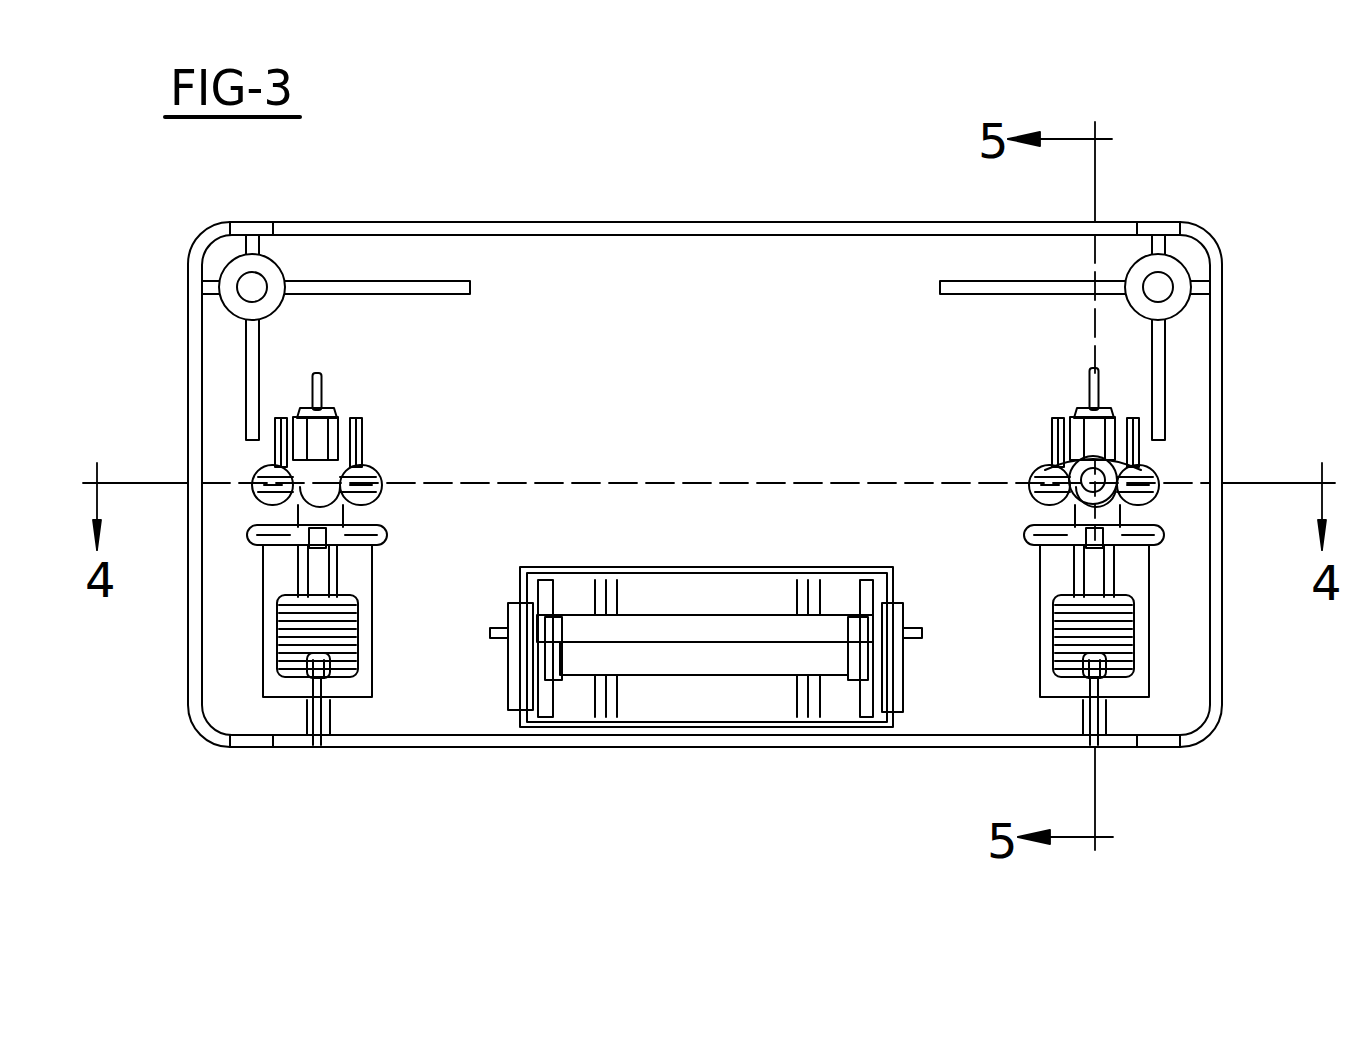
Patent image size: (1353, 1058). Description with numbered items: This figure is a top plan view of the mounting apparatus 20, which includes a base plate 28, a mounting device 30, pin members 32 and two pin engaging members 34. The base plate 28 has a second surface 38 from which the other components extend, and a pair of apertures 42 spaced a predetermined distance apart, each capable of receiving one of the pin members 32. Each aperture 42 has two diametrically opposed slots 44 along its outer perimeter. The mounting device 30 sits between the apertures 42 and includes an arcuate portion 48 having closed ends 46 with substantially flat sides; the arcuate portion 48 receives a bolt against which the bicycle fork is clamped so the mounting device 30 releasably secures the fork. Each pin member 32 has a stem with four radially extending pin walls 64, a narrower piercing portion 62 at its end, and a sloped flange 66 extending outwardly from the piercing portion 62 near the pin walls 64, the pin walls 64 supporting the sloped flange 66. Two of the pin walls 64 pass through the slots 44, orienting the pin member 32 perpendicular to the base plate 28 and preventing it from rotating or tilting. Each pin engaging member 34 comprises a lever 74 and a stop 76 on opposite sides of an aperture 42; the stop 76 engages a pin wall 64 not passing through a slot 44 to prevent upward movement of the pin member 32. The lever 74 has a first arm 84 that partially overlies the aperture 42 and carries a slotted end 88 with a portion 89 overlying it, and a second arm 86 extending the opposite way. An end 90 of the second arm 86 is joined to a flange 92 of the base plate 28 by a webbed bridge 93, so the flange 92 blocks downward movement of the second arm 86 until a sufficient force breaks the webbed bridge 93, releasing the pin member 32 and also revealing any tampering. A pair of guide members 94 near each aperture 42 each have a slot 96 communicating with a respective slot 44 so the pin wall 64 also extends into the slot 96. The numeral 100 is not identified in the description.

The mounting apparatus 20 is at (1172, 205).
The base plate 28 is at (512, 265).
The second surface 38 is at (621, 278).
The mounting device 30 is at (597, 657).
The pin member 32 is at (1172, 475).
The pin engaging member 34 is at (300, 510).
The aperture 42 is at (338, 414).
The slot 44 is at (272, 477).
The closed end 46 is at (895, 667).
The arcuate portion 48 is at (733, 655).
The piercing portion 62 is at (1112, 420).
The pin wall 64 is at (1034, 462).
The sloped flange 66 is at (1048, 455).
The lever 74 is at (317, 567).
The stop 76 is at (323, 430).
The first arm 84 is at (332, 513).
The second arm 86 is at (353, 577).
The slotted end 88 is at (382, 492).
The portion 89 is at (1118, 510).
The end 90 is at (337, 673).
The flange 92 is at (317, 697).
The webbed bridge 93 is at (313, 682).
The guide member 94 is at (278, 497).
The slot 96 is at (285, 468).
The plunger rod 100 is at (317, 583).